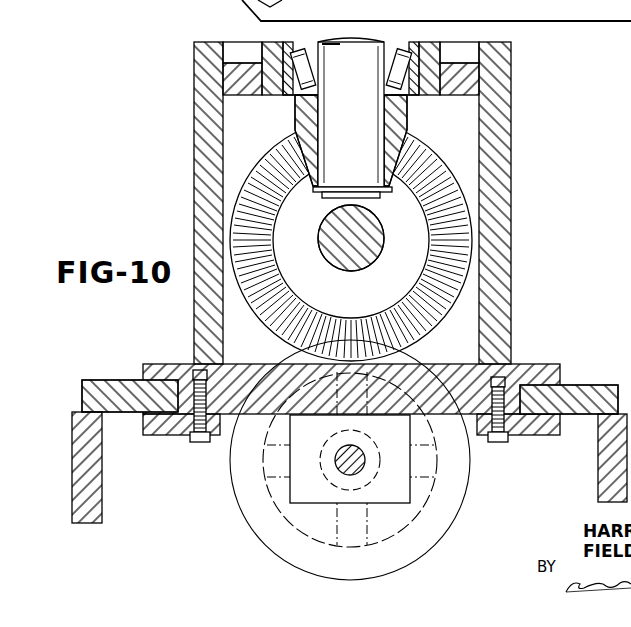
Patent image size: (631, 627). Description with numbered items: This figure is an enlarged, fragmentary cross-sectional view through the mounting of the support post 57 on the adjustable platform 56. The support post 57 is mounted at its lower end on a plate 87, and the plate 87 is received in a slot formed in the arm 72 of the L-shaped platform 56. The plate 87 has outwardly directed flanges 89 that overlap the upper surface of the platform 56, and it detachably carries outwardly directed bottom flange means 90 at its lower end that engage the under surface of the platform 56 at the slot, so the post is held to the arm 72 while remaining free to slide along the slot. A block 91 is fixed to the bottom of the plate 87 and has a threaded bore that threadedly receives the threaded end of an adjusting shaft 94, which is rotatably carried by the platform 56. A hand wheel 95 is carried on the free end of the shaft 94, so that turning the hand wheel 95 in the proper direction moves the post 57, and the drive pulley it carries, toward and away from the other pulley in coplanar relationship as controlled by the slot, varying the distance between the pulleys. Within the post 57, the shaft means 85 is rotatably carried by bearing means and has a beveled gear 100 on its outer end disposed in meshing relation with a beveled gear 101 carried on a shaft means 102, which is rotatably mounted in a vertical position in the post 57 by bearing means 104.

The adjustable platform 56 is at (70, 458).
The support post 57 is at (194, 216).
The arm 72 is at (82, 390).
The shaft means 85 is at (345, 237).
The plate 87 is at (165, 356).
The outwardly directed flanges 89 is at (549, 372).
The bottom flange means 90 is at (540, 434).
The block 91 is at (400, 498).
The adjusting shaft 94 is at (350, 462).
The hand wheel 95 is at (248, 508).
The beveled gear 100 is at (301, 240).
The beveled gear 101 is at (290, 157).
The shaft means 102 is at (328, 113).
The bearing means 104 is at (420, 75).